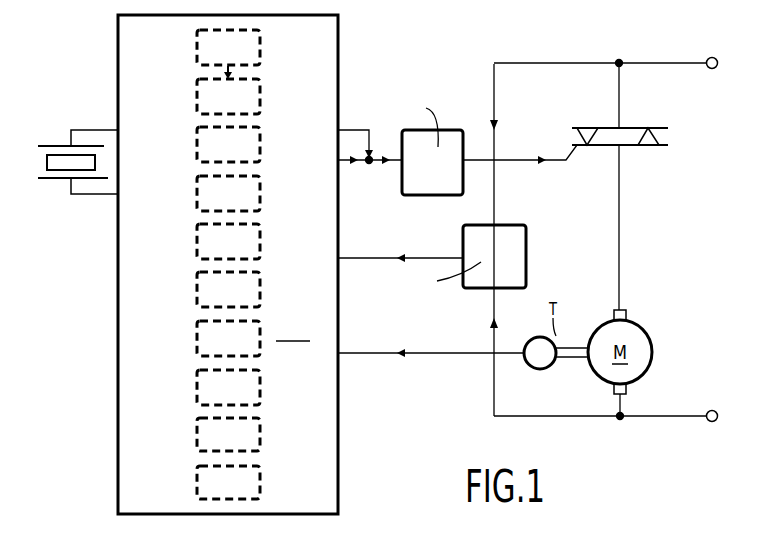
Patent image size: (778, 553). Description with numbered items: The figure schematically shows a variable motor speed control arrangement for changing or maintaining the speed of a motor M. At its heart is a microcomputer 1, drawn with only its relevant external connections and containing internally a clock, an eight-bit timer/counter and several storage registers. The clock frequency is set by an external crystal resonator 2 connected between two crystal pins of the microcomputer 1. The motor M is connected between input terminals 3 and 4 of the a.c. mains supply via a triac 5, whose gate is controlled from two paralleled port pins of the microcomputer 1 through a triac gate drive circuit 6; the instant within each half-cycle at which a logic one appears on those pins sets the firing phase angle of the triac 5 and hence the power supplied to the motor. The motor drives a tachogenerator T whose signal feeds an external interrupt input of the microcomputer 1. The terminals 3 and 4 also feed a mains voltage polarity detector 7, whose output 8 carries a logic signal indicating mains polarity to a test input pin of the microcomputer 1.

The microcomputer 1 is at (118, 310).
The crystal resonator 2 is at (56, 145).
The input terminal 3 is at (712, 57).
The input terminal 4 is at (712, 410).
The triac 5 is at (636, 127).
The triac gate drive circuit 6 is at (402, 186).
The mains voltage polarity detector 7 is at (526, 257).
The output 8 is at (463, 256).